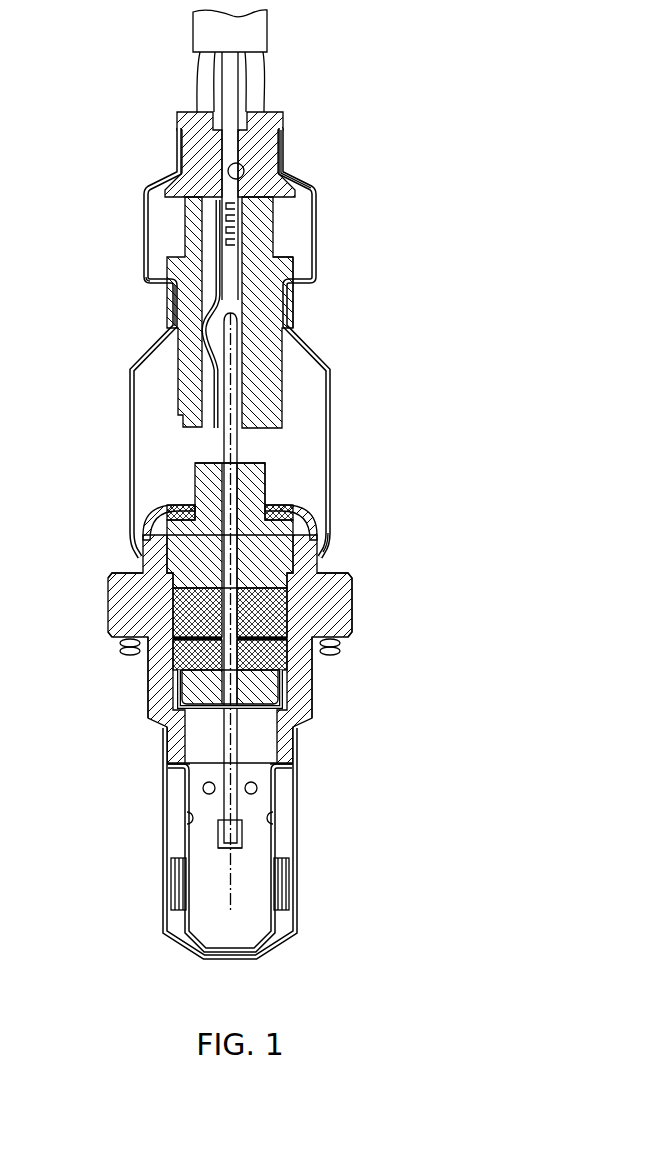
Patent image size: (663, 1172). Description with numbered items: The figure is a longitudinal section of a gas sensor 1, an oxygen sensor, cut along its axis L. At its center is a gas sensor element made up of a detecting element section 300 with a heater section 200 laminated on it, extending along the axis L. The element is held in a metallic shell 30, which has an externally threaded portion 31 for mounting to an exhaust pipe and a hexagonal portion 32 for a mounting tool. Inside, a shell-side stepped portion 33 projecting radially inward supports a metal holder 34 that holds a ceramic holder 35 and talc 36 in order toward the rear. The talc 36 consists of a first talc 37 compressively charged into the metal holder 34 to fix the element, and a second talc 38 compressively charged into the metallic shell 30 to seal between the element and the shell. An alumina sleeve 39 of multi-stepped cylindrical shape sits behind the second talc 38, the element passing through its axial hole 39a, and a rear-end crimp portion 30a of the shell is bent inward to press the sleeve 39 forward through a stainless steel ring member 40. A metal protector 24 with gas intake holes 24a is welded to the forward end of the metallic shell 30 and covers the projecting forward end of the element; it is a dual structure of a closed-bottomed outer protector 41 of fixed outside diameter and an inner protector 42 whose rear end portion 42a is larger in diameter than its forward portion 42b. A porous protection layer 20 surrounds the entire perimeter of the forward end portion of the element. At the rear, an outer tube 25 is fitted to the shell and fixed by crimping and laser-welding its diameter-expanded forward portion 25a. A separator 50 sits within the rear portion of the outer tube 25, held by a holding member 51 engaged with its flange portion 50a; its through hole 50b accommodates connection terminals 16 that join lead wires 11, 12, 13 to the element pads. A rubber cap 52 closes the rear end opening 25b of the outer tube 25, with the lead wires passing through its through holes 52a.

The gas sensor 1 is at (259, 504).
The lead wire 11 is at (228, 97).
The lead wire 12 is at (203, 68).
The lead wire 13 is at (256, 86).
The connection terminal 16 is at (228, 302).
The porous protection layer 20 is at (223, 850).
The protector 24 is at (219, 863).
The gas intake hole 24a is at (257, 783).
The outer tube 25 is at (146, 228).
The diameter-expanded forward portion 25a is at (329, 555).
The rear end opening 25b is at (284, 150).
The metallic shell 30 is at (243, 617).
The rear-end crimp portion 30a is at (290, 503).
The externally threaded portion 31 is at (314, 697).
The hexagonal portion 32 is at (353, 594).
The shell-side stepped portion 33 is at (284, 685).
The metal holder 34 is at (166, 727).
The ceramic holder 35 is at (180, 690).
The talc 36 is at (148, 636).
The first talc 37 is at (176, 655).
The second talc 38 is at (176, 610).
The sleeve 39 is at (140, 548).
The axial hole 39a is at (223, 483).
The ring member 40 is at (293, 515).
The outer protector 41 is at (298, 890).
The inner protector 42 is at (219, 854).
The rear end portion 42a is at (168, 758).
The forward portion 42b is at (176, 856).
The separator 50 is at (190, 215).
The flange portion 50a is at (290, 268).
The through hole 50b is at (244, 248).
The holding member 51 is at (150, 292).
The rubber cap 52 is at (205, 157).
The through hole 52a is at (244, 170).
The heater section 200 is at (240, 835).
The detecting element section 300 is at (240, 835).
The axis L is at (232, 905).